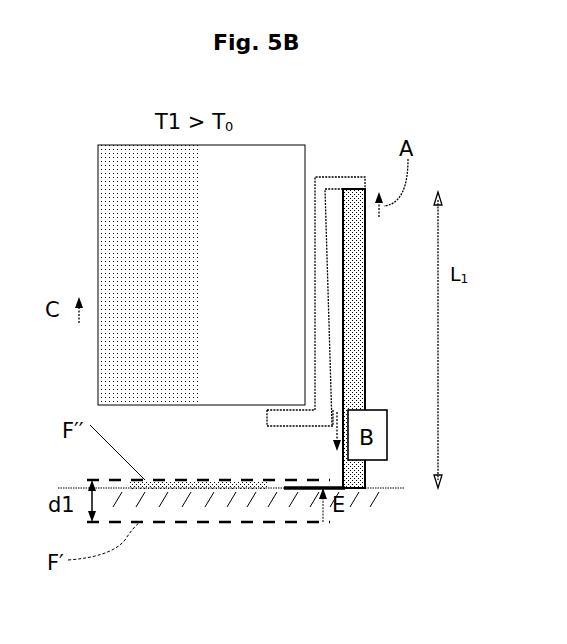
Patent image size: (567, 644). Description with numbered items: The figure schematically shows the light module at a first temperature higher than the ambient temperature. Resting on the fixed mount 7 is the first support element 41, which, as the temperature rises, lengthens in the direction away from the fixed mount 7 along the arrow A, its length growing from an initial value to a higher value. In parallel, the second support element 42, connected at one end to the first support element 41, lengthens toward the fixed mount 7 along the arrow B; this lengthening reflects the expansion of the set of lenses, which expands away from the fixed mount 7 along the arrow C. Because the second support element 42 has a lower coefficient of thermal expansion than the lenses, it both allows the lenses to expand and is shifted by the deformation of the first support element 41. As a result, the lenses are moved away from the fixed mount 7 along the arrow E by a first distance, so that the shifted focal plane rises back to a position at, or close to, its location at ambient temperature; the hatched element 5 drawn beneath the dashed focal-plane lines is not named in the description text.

The substrate 5 is at (257, 490).
The fixed mount 7 is at (388, 488).
The first support element 41 is at (357, 348).
The second support element 42 is at (338, 186).